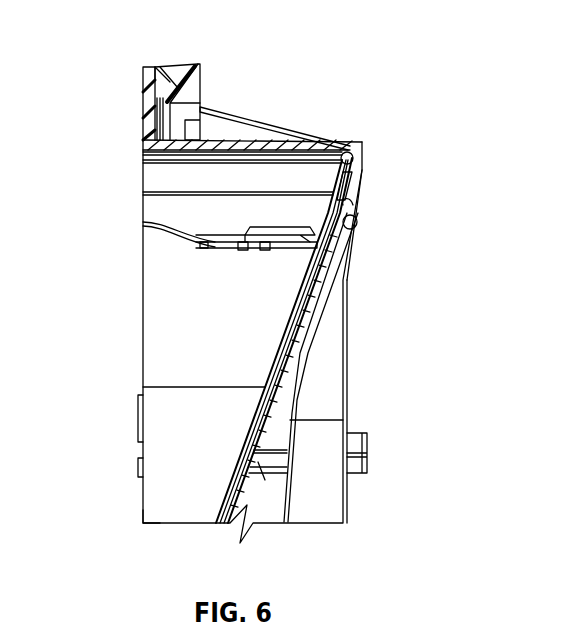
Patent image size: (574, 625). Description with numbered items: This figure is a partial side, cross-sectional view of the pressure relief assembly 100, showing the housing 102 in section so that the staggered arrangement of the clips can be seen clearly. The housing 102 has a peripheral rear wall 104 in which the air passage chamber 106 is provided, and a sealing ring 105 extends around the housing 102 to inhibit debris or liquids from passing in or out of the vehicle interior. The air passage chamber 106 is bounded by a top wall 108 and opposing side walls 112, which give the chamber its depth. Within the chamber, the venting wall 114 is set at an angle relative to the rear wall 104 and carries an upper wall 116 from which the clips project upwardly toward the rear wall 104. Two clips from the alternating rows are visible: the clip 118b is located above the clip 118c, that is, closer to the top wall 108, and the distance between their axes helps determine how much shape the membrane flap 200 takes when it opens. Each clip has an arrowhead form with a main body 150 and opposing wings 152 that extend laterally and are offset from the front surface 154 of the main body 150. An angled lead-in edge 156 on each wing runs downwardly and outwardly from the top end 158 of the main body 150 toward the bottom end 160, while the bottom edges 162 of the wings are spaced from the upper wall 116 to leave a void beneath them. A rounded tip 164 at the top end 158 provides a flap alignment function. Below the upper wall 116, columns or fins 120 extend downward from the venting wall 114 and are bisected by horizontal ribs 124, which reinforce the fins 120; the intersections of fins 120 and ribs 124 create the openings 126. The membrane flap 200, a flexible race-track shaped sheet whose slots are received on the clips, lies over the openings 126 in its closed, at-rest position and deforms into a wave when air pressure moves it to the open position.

The pressure relief assembly 100 is at (305, 43).
The housing 102 is at (143, 100).
The peripheral rear wall 104 is at (143, 136).
The sealing ring 105 is at (168, 80).
The air passage chamber 106 is at (160, 512).
The top wall 108 is at (240, 152).
The side walls 112 is at (162, 373).
The venting wall 114 is at (353, 150).
The upper wall 116 is at (356, 190).
The clip 118b is at (197, 233).
The clip 118c is at (200, 250).
The fins 120 is at (273, 443).
The horizontal ribs 124 is at (258, 465).
The openings 126 is at (273, 487).
The main body 150 is at (250, 227).
The wings 152 is at (306, 227).
The front surface 154 is at (285, 258).
The angled lead-in edge 156 is at (260, 230).
The top end 158 is at (220, 250).
The bottom end 160 is at (323, 285).
The bottom edges 162 is at (357, 227).
The rounded tip 164 is at (143, 222).
The membrane flap 200 is at (222, 505).